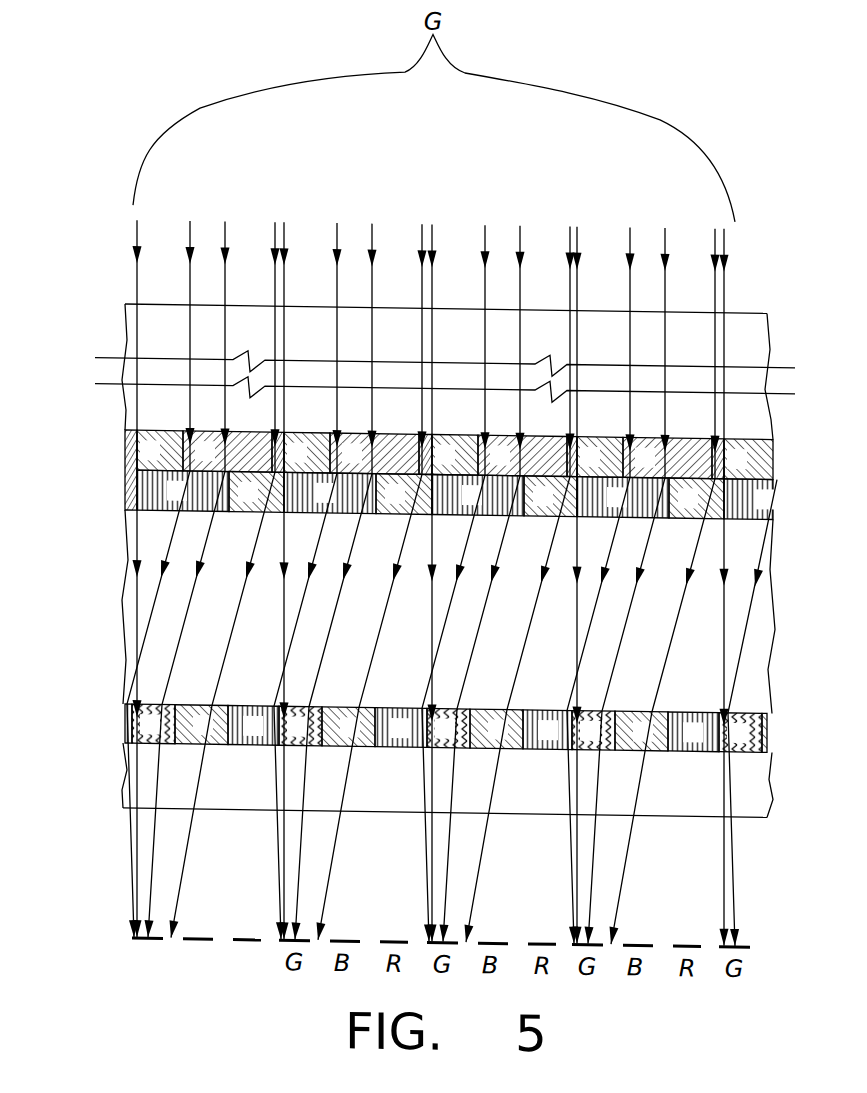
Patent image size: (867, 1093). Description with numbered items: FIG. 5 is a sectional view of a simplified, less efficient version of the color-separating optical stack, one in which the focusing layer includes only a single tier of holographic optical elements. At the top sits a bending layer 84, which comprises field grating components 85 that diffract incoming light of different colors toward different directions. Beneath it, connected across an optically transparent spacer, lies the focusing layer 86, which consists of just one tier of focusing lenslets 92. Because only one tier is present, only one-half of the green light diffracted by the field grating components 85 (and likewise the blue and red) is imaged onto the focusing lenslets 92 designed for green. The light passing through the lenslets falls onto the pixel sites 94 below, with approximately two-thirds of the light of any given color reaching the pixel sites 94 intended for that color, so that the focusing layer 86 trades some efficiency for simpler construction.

The bending layer 84 is at (116, 431).
The field grating components 85 is at (689, 438).
The focusing layer 86 is at (127, 724).
The focusing lenslets 92 is at (170, 745).
The pixel sites 94 is at (297, 972).